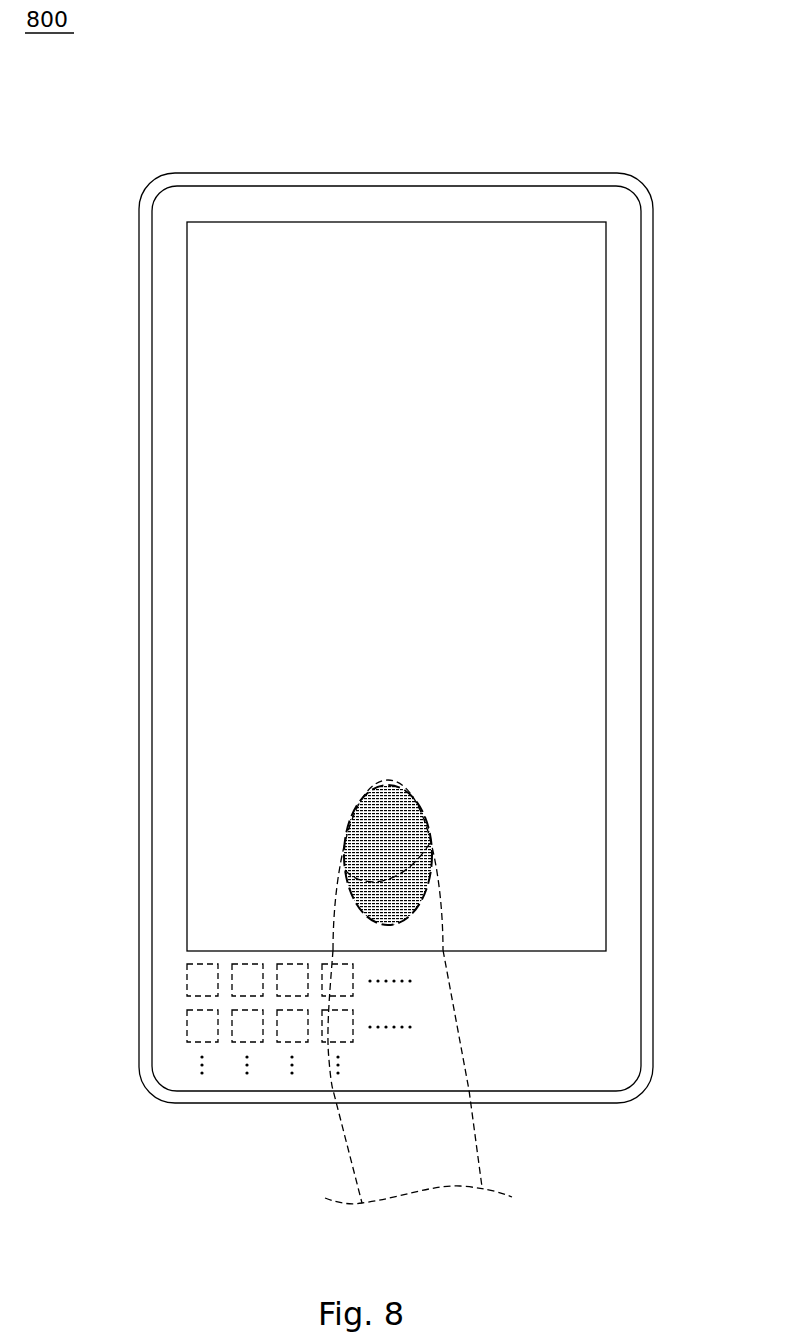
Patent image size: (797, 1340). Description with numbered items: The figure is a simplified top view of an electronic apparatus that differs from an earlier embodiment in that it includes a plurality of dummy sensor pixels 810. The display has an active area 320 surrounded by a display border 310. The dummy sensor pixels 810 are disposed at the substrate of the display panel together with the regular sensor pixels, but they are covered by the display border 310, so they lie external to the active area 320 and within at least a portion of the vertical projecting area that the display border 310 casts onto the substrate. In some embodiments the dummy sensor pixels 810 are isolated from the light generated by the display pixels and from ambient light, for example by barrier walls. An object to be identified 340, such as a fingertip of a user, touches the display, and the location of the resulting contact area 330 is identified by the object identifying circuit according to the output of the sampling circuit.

The display border 310 is at (487, 205).
The active area 320 is at (247, 222).
The contact area 330 is at (355, 900).
The object to be identified 340 is at (448, 1124).
The dummy sensor pixels 810 is at (190, 975).